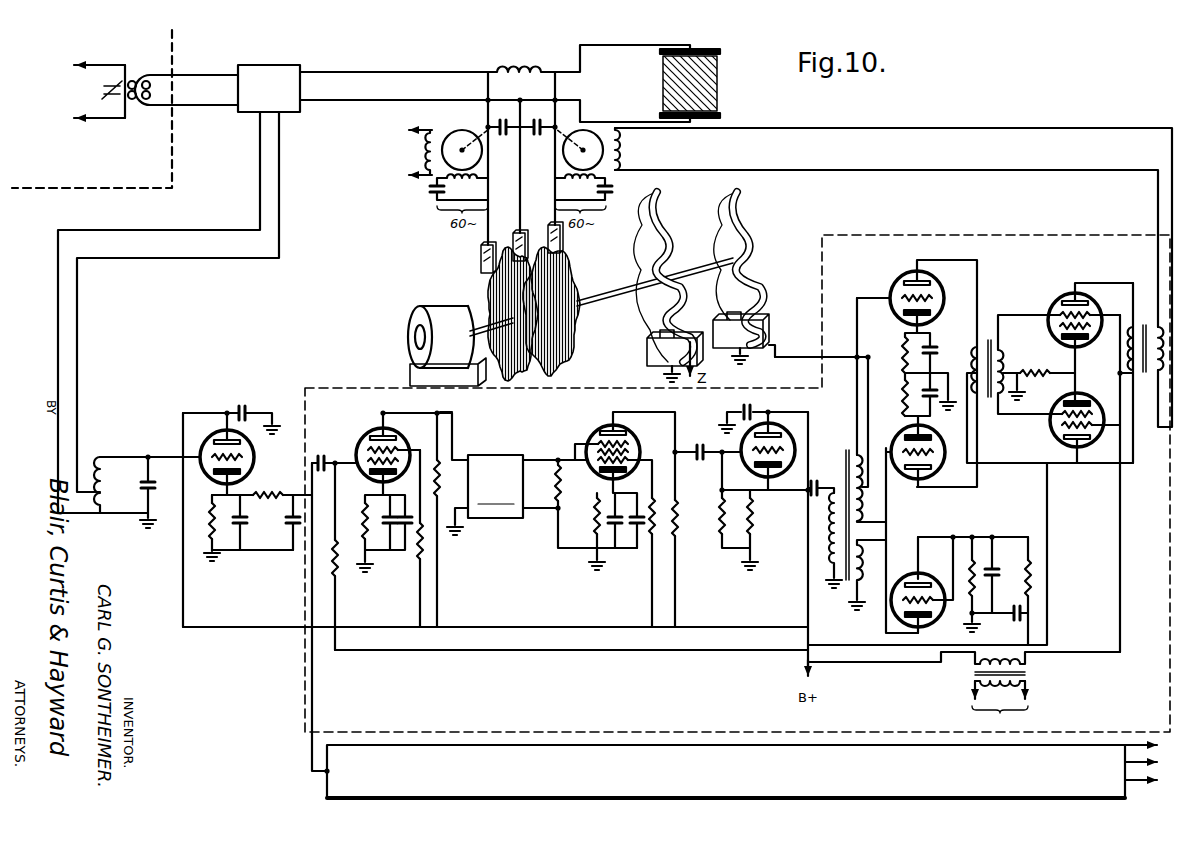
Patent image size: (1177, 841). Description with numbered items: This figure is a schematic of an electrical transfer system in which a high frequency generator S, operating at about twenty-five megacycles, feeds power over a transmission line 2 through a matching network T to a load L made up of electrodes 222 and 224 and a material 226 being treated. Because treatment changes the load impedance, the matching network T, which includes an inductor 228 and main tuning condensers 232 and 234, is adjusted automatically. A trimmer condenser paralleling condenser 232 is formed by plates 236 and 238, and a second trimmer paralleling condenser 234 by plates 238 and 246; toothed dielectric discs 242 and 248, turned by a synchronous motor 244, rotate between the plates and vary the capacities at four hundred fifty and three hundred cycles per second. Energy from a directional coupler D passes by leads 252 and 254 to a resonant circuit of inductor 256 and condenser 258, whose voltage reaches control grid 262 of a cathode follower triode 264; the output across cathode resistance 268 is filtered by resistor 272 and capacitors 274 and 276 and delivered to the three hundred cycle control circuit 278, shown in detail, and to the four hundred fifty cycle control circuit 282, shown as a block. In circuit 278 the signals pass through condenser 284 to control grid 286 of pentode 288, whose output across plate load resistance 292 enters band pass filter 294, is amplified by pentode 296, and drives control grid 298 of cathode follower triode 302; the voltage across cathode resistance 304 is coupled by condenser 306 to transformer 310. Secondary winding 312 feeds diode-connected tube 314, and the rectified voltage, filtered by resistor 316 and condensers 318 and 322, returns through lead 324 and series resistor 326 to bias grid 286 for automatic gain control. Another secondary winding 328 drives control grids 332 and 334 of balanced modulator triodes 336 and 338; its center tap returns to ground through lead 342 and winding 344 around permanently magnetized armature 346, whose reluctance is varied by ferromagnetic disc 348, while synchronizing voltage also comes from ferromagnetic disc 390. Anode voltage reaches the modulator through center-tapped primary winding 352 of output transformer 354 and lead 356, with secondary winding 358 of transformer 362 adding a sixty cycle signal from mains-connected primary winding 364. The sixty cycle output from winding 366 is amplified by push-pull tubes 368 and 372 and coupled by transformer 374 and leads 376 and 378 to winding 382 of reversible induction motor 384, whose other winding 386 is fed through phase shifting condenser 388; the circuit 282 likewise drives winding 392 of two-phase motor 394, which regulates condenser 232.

The high frequency generator S is at (178, 55).
The directional coupler D is at (277, 62).
The matching network T is at (583, 136).
The load L is at (709, 68).
The transmission line 2 is at (195, 105).
The electrode 222 is at (713, 47).
The electrode 224 is at (711, 121).
The material 226 is at (719, 90).
The inductor 228 is at (530, 63).
The main tuning condenser 232 is at (498, 126).
The main tuning condenser 234 is at (542, 126).
The metal plate 236 is at (480, 257).
The metal plate 238 is at (517, 231).
The dielectric disc 242 is at (487, 300).
The synchronous motor 244 is at (432, 318).
The metal plate 246 is at (561, 247).
The dielectric disc 248 is at (562, 278).
The lead 252 is at (80, 336).
The lead 254 is at (56, 326).
The inductor 256 is at (105, 481).
The condenser 258 is at (153, 484).
The control grid 262 is at (207, 448).
The triode vacuum tube 264 is at (254, 450).
The cathode resistance 268 is at (207, 521).
The resistor 272 is at (268, 489).
The capacitor 274 is at (250, 519).
The capacitor 276 is at (285, 528).
The 300 cycle control circuit 278 is at (357, 389).
The 450 cycle control circuit 282 is at (599, 744).
The condenser 284 is at (320, 455).
The control grid 286 is at (372, 476).
The pentode amplifier tube 288 is at (378, 431).
The plate load resistance 292 is at (453, 445).
The band pass filter 294 is at (491, 452).
The pentode tube 296 is at (603, 428).
The control grid 298 is at (785, 451).
The triode tube 302 is at (791, 433).
The cathode resistance 304 is at (757, 531).
The condenser 306 is at (824, 481).
The transformer 310 is at (849, 456).
The secondary winding 312 is at (853, 553).
The diode-connected vacuum tube 314 is at (912, 578).
The resistor 316 is at (1032, 584).
The condenser 318 is at (998, 568).
The condenser 322 is at (1012, 623).
The lead 324 is at (628, 652).
The series resistor 326 is at (338, 581).
The secondary winding 328 is at (867, 520).
The control grid 332 is at (904, 285).
The control grid 334 is at (906, 441).
The triode tube 336 is at (940, 297).
The triode tube 338 is at (910, 479).
The lead 342 is at (833, 356).
The winding 344 is at (745, 362).
The permanently magnetized armature 346 is at (770, 329).
The ferromagnetic disc 348 is at (733, 222).
The primary winding 352 is at (975, 350).
The output transformer 354 is at (989, 340).
The lead 356 is at (1049, 519).
The secondary winding 358 is at (964, 690).
The transformer 362 is at (1030, 668).
The primary winding 364 is at (1030, 686).
The winding 366 is at (1002, 364).
The tube 368 is at (1066, 299).
The tube 372 is at (1056, 438).
The transformer 374 is at (1148, 326).
The lead 376 is at (990, 127).
The lead 378 is at (990, 170).
The winding 382 is at (625, 153).
The two-phase reversible induction motor 384 is at (587, 133).
The winding 386 is at (563, 175).
The phase shifting condenser 388 is at (612, 188).
The ferromagnetic disc 390 is at (650, 225).
The winding 392 is at (433, 128).
The two-phase motor 394 is at (482, 152).